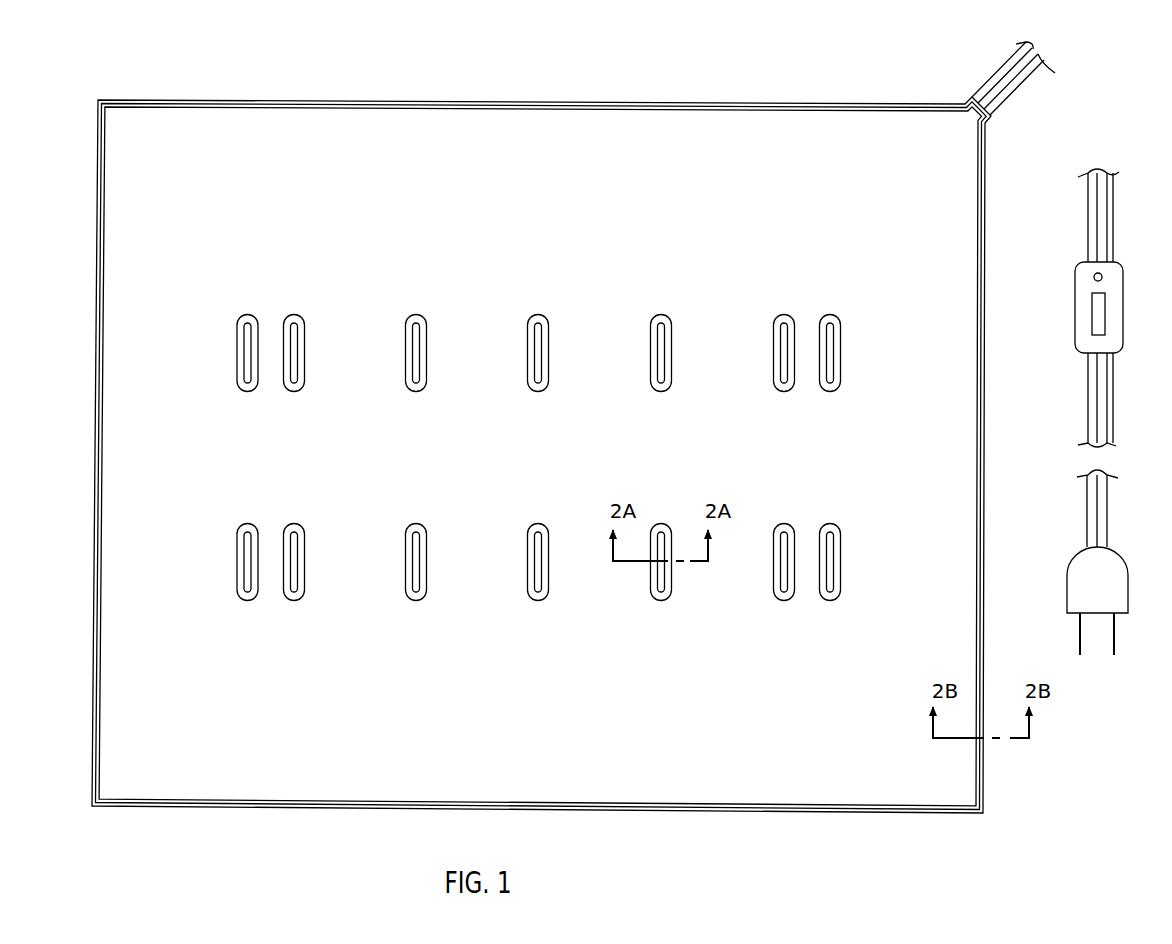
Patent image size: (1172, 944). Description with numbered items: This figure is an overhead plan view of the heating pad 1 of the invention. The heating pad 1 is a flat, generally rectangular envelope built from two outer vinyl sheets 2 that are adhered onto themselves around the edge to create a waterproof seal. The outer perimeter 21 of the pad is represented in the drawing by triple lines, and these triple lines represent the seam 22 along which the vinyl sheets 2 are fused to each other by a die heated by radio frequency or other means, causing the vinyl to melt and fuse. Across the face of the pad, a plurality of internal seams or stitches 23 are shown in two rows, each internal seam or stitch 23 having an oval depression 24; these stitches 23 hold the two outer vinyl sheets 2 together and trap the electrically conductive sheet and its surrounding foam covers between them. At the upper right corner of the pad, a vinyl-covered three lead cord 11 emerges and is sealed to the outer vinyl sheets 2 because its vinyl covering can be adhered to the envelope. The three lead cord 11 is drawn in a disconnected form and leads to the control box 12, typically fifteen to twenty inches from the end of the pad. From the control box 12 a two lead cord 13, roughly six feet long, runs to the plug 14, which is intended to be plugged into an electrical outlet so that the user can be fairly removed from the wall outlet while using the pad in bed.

The heating pad 1 is at (364, 57).
The outer vinyl sheet 2 is at (452, 145).
The three lead cord 11 is at (1012, 92).
The control box 12 is at (1085, 308).
The two lead cord 13 is at (1090, 405).
The plug 14 is at (1083, 578).
The outer perimeter 21 is at (798, 103).
The seam 22 is at (738, 110).
The internal seam or stitch 23 is at (544, 334).
The oval depression 24 is at (413, 316).